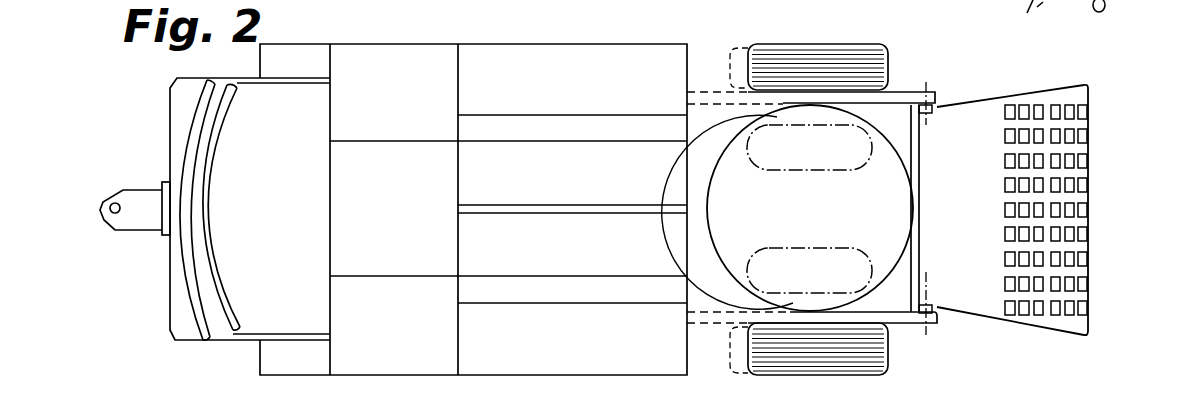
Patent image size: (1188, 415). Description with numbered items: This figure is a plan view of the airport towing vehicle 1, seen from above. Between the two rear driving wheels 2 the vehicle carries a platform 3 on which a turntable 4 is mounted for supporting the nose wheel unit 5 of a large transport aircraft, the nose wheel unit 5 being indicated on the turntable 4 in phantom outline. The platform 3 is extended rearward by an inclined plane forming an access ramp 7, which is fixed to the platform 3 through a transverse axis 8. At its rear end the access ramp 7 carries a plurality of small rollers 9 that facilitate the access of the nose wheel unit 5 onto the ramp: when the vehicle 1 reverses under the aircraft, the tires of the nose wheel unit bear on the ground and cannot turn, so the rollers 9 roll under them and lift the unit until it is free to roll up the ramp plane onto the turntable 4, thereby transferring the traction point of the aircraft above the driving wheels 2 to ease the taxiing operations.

The airport towing vehicle 1 is at (427, 56).
The rear driving wheels 2 is at (817, 55).
The platform 3 is at (888, 113).
The turntable 4 is at (883, 263).
The nose wheel unit 5 is at (865, 163).
The access ramp 7 is at (983, 117).
The transverse axis 8 is at (937, 312).
The small rollers 9 is at (1090, 111).